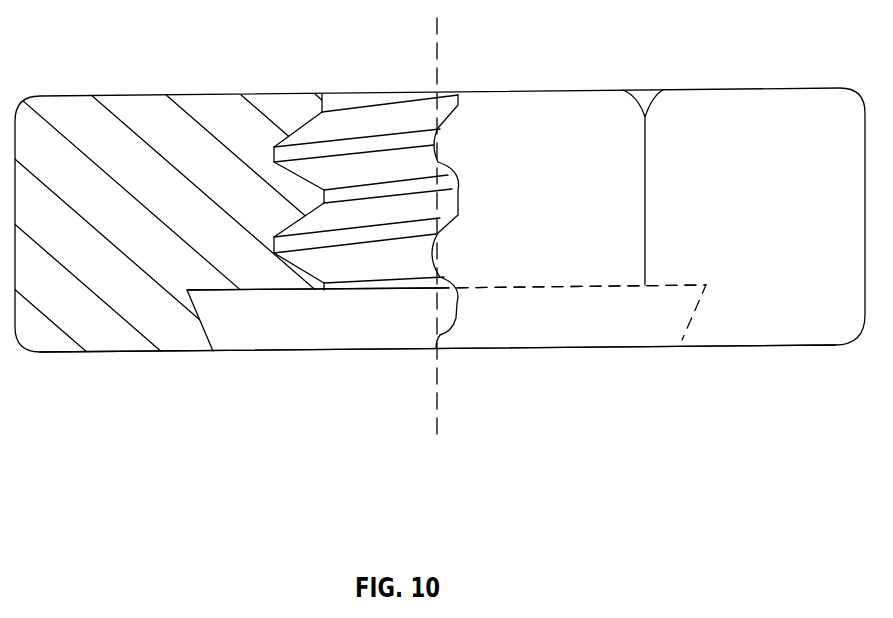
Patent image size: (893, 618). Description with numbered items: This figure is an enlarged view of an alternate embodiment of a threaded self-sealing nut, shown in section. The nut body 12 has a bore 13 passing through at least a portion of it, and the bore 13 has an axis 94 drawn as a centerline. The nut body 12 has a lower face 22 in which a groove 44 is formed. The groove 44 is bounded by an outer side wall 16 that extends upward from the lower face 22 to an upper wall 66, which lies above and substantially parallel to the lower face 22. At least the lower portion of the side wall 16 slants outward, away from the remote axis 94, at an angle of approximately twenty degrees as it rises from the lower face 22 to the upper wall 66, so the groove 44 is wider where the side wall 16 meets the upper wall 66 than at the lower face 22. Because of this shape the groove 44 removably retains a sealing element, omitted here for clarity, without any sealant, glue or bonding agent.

The nut body 12 is at (115, 90).
The bore 13 is at (326, 108).
The axis 94 is at (434, 52).
The lower face 22 is at (140, 352).
The side wall 16 is at (200, 317).
The upper wall 66 is at (268, 293).
The groove 44 is at (504, 317).